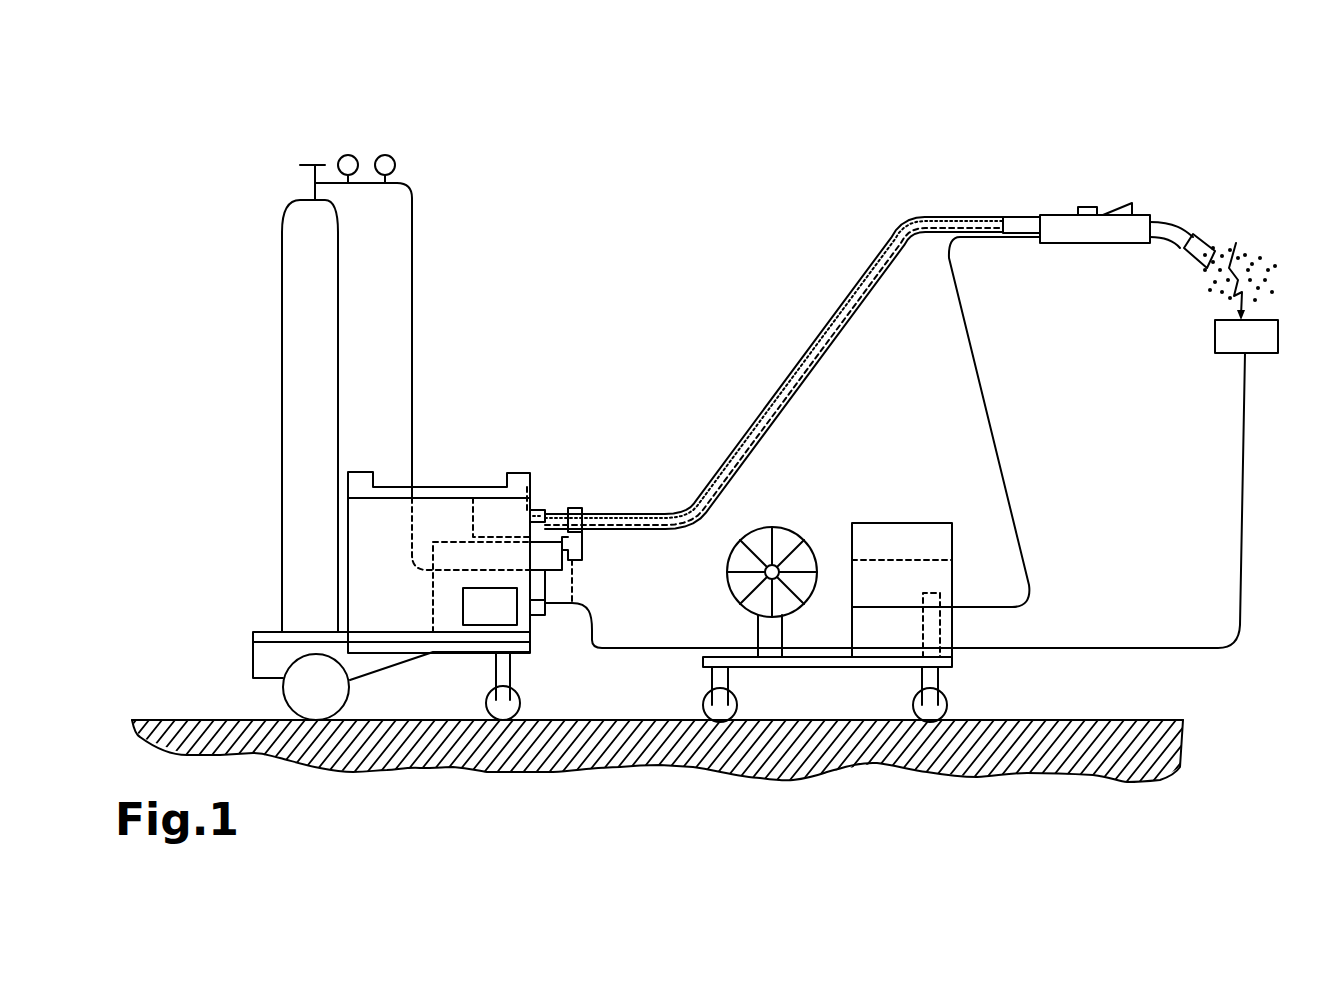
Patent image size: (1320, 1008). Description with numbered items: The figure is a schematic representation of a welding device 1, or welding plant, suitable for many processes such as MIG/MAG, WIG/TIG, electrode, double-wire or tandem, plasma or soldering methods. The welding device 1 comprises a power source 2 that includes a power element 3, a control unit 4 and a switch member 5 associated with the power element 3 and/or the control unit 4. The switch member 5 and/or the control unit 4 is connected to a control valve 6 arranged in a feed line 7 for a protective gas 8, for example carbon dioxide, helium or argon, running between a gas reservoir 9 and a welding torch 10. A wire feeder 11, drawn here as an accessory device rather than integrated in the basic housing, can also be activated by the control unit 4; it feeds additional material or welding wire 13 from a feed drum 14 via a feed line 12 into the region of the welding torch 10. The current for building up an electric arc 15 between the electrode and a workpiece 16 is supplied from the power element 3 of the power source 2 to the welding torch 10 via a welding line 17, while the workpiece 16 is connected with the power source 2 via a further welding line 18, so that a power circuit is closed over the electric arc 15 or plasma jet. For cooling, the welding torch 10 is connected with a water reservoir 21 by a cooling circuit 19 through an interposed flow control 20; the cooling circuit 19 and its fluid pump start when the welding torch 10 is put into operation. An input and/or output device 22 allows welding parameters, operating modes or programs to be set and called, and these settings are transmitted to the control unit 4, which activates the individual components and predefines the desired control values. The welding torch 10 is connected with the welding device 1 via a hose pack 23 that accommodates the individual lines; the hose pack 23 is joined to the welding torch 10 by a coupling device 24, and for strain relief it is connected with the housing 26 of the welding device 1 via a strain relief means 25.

The welding device 1 is at (216, 148).
The power source 2 is at (488, 362).
The power element 3 is at (484, 613).
The control unit 4 is at (430, 602).
The switch member 5 is at (540, 640).
The control valve 6 is at (538, 585).
The feed line 7 is at (937, 232).
The protective gas 8 is at (1223, 224).
The gas reservoir 9 is at (310, 273).
The welding torch 10 is at (1142, 184).
The wire feeder 11 is at (998, 695).
The feed line 12 is at (999, 452).
The welding wire 13 is at (1237, 245).
The feed drum 14 is at (776, 560).
The electric arc 15 is at (1218, 305).
The workpiece 16 is at (1253, 338).
The welding line 17 is at (860, 278).
The further welding line 18 is at (1245, 525).
The cooling circuit 19 is at (725, 446).
The flow control 20 is at (537, 510).
The water reservoir 21 is at (492, 510).
The input and/or output device 22 is at (527, 480).
The hose pack 23 is at (632, 513).
The coupling device 24 is at (1020, 228).
The strain relief means 25 is at (577, 510).
The housing 26 is at (577, 543).